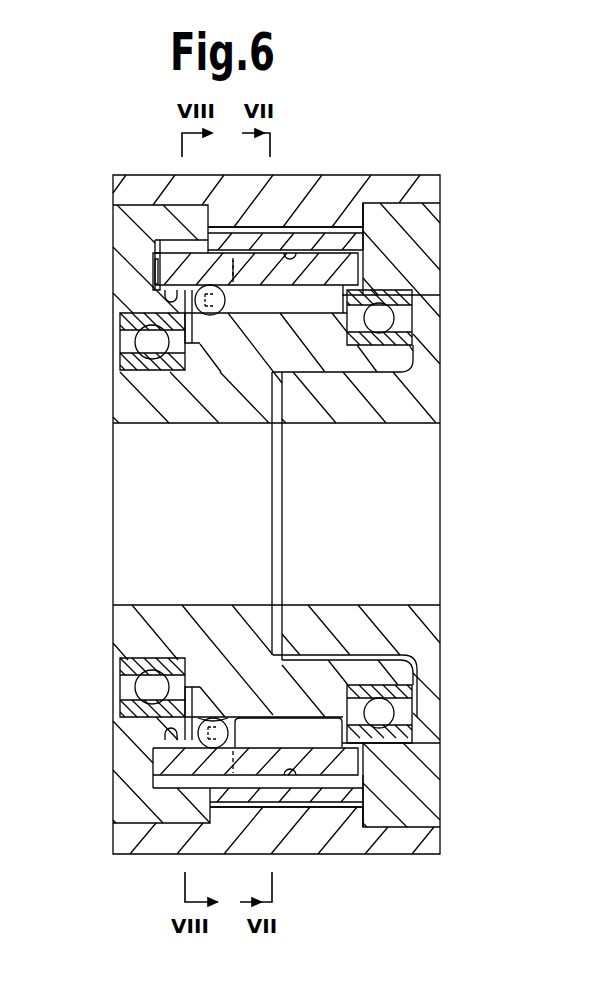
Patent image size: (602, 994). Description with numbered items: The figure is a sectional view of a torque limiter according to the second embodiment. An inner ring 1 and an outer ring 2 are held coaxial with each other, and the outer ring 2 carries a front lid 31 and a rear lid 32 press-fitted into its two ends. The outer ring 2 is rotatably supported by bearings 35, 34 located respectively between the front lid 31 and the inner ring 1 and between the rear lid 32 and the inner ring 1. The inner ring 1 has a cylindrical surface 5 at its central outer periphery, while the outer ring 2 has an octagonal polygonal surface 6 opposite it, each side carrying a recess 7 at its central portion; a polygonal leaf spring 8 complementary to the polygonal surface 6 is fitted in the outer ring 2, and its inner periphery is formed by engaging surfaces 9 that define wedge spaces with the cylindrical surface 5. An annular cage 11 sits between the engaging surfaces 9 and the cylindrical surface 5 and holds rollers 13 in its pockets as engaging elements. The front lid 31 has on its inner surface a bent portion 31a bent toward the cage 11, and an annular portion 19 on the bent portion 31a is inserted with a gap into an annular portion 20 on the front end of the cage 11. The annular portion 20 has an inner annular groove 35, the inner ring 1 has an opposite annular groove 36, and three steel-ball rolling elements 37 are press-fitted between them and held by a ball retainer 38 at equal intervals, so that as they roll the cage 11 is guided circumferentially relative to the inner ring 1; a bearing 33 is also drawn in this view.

The inner ring 1 is at (113, 420).
The outer ring 2 is at (113, 178).
The cylindrical surface 5 is at (313, 305).
The polygonal surface 6 is at (362, 235).
The recess 7 is at (318, 230).
The leaf spring 8 is at (344, 240).
The engaging surfaces 9 is at (291, 248).
The annular cage 11 is at (363, 262).
The rollers 13 is at (254, 313).
The annular portion 19 is at (153, 270).
The annular portion 20 is at (178, 288).
The front lid 31 is at (113, 228).
The bent portion 31a is at (165, 308).
The rear lid 32 is at (420, 383).
The bearing 33 is at (130, 365).
The bearing 34 is at (420, 297).
The annular groove 35 is at (298, 749).
The annular groove 36 is at (207, 718).
The rolling elements 37 is at (200, 317).
The ball retainer 38 is at (182, 727).